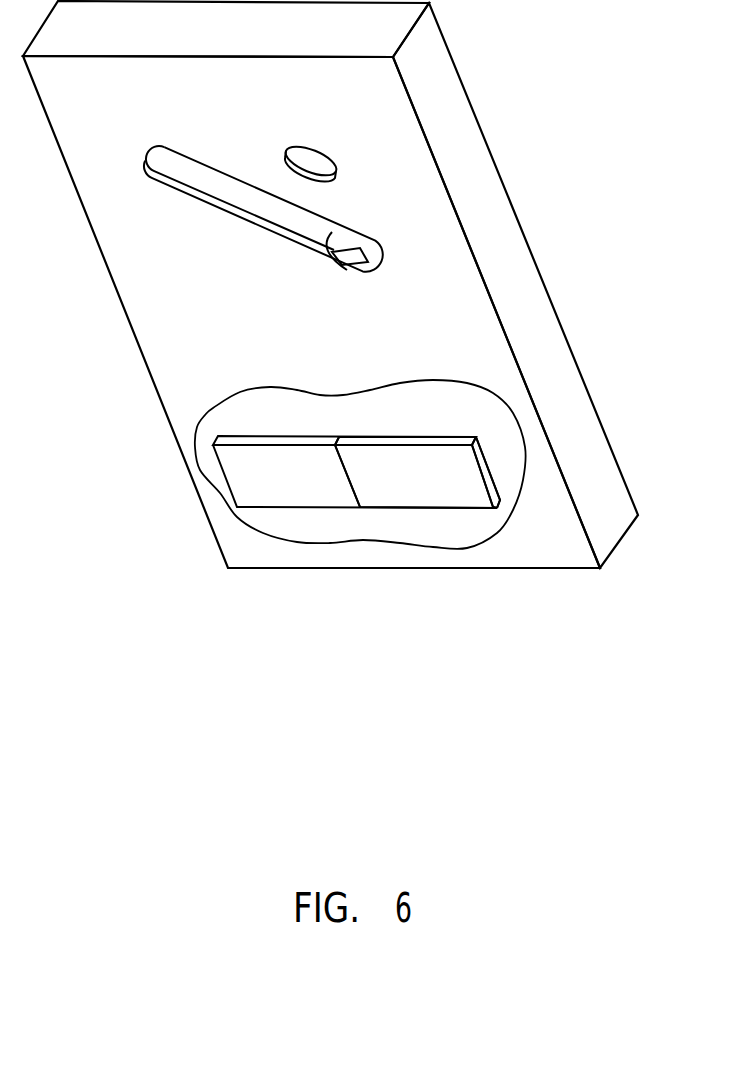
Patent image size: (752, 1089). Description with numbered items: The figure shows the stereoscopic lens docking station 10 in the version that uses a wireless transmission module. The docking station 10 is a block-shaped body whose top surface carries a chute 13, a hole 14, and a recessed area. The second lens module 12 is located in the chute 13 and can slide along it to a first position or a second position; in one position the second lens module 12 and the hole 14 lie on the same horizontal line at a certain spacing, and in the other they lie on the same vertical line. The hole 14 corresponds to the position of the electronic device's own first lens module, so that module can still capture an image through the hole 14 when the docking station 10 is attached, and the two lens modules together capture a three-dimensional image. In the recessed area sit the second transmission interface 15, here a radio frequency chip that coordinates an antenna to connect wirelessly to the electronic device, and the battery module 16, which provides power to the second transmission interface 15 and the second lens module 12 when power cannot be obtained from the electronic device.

The stereoscopic lens docking station 10 is at (175, 603).
The second lens module 12 is at (353, 275).
The chute 13 is at (198, 173).
The hole 14 is at (303, 162).
The second transmission interface 15 is at (252, 467).
The battery module 16 is at (438, 493).